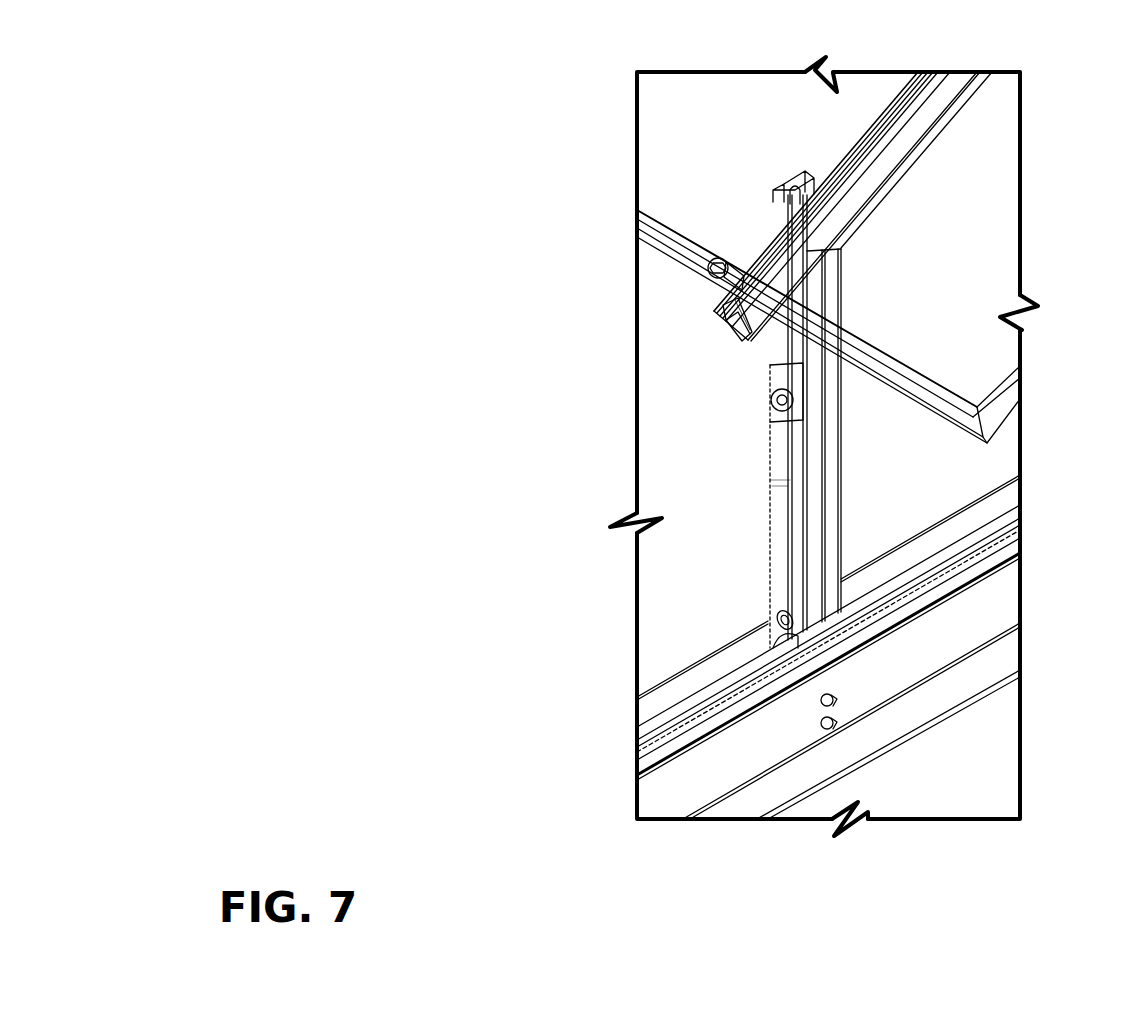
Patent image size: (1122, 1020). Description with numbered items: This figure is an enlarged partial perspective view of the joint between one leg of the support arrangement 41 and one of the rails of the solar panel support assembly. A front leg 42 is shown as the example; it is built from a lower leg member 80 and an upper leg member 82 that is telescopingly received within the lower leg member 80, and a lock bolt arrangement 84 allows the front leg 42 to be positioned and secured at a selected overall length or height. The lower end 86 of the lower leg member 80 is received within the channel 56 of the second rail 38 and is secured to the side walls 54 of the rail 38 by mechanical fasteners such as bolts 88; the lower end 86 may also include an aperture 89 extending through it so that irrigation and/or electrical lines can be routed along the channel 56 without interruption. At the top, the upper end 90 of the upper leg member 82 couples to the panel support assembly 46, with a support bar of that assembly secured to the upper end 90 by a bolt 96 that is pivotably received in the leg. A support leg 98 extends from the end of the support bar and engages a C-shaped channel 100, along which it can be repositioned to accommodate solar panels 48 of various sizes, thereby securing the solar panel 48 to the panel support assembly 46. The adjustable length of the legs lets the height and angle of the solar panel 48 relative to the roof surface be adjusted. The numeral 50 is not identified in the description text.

The second rail 38 is at (925, 737).
The support arrangement 41 is at (683, 465).
The front leg 42 is at (770, 483).
The panel support assembly 46 is at (760, 340).
The solar panel 48 is at (655, 257).
The sill rail 50 is at (963, 668).
The side walls 54 is at (995, 594).
The channel 56 is at (928, 538).
The lower leg member 80 is at (773, 552).
The upper leg member 82 is at (842, 263).
The lock bolt arrangement 84 is at (772, 402).
The lower end 86 is at (775, 603).
The bolts 88 is at (838, 706).
The aperture 89 is at (772, 642).
The upper end 90 is at (840, 246).
The bolt 96 is at (775, 190).
The support leg 98 is at (710, 292).
The C-shaped channel 100 is at (728, 322).